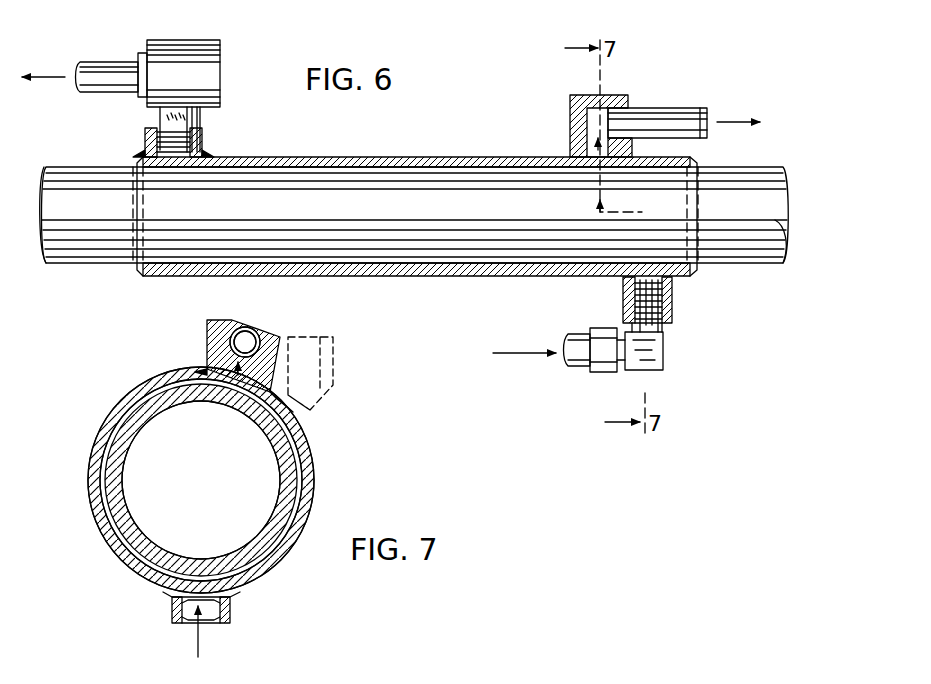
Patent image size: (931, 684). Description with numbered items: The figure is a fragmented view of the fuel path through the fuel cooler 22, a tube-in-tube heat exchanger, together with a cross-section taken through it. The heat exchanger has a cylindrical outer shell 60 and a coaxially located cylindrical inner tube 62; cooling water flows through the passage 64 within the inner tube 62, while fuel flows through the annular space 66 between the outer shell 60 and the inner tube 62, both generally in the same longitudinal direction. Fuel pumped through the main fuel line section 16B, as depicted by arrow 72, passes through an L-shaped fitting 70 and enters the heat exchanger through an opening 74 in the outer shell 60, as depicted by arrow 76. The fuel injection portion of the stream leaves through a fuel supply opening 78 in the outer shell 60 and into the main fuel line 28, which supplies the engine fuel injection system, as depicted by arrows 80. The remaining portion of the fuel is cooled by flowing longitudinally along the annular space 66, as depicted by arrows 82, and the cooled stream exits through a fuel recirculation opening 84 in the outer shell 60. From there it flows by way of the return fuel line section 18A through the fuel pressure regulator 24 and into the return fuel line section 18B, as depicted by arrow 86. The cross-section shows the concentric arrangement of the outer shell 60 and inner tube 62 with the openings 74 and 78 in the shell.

In FIG. 6, the main fuel line section 16B is at (584, 370).
In FIG. 6, the return fuel line section 18A is at (143, 145).
In FIG. 7, the return fuel line section 18A is at (333, 387).
In FIG. 6, the return fuel line section 18B is at (95, 63).
In FIG. 6, the fuel cooler 22 is at (374, 153).
In FIG. 7, the fuel cooler 22 is at (105, 395).
In FIG. 6, the fuel pressure regulator 24 is at (205, 55).
In FIG. 6, the main fuel line 28 is at (660, 108).
In FIG. 7, the main fuel line 28 is at (262, 320).
In FIG. 7, the cylindrical outer shell 60 is at (88, 497).
In FIG. 7, the cylindrical inner tube 62 is at (115, 487).
In FIG. 7, the passage 64 is at (238, 497).
In FIG. 7, the annular space 66 is at (307, 500).
In FIG. 6, the L-shaped fitting 70 is at (665, 353).
In FIG. 6, the arrow 72 is at (508, 350).
In FIG. 7, the opening 74 is at (172, 607).
In FIG. 6, the arrow 76 is at (643, 278).
In FIG. 7, the arrow 76 is at (200, 644).
In FIG. 7, the fuel supply opening 78 is at (205, 352).
In FIG. 6, the arrows 80 is at (568, 153).
In FIG. 7, the arrows 80 is at (290, 342).
In FIG. 6, the arrows 82 is at (171, 167).
In FIG. 6, the fuel recirculation opening 84 is at (205, 150).
In FIG. 7, the fuel recirculation opening 84 is at (293, 412).
In FIG. 6, the arrow 86 is at (50, 77).